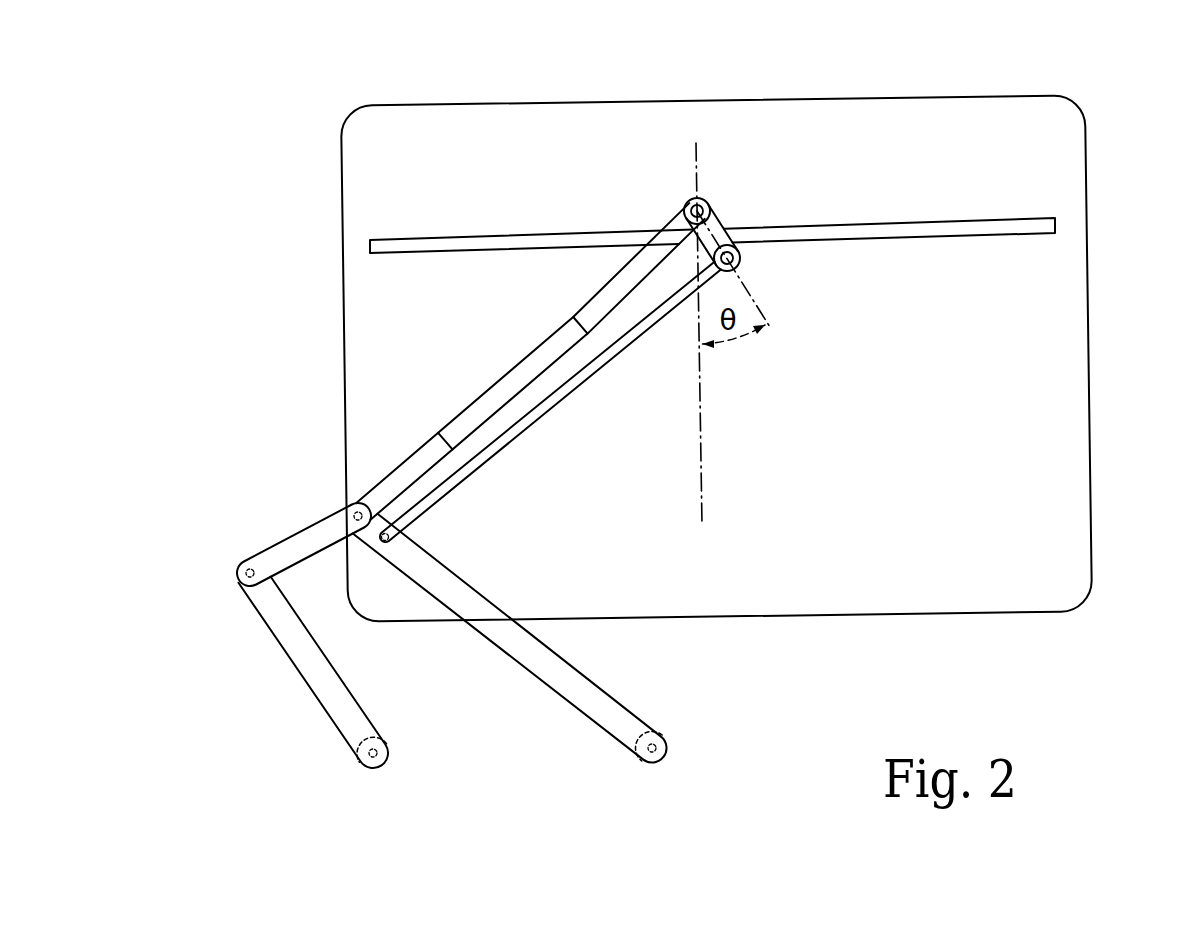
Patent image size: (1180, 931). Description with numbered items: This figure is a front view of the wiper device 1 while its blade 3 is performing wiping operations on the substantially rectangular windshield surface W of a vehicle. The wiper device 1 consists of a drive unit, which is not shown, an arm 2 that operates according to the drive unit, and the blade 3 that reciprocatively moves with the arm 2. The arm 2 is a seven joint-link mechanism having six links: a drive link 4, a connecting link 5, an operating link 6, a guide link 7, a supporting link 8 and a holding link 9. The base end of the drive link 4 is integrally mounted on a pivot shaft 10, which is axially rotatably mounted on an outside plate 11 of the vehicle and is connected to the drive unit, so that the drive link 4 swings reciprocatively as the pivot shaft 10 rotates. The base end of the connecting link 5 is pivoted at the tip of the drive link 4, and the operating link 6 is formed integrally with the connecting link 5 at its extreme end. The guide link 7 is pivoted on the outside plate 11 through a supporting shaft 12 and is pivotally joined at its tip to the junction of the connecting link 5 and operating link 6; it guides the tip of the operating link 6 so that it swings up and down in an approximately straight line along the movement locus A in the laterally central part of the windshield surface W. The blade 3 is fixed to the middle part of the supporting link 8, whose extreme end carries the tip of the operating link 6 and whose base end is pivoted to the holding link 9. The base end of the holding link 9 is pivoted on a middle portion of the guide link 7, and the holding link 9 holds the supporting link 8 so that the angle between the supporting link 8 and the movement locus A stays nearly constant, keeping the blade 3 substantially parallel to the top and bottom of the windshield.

The wiper device 1 is at (755, 313).
The arm 2 is at (504, 497).
The blade 3 is at (958, 222).
The drive link 4 is at (309, 713).
The connecting link 5 is at (298, 547).
The operating link 6 is at (508, 390).
The guide link 7 is at (510, 673).
The supporting link 8 is at (707, 205).
The holding link 9 is at (573, 388).
The pivot shaft 10 is at (360, 770).
The outside plate 11 is at (785, 690).
The supporting shaft 12 is at (637, 760).
The windshield surface W is at (1089, 189).
The movement locus A is at (702, 482).